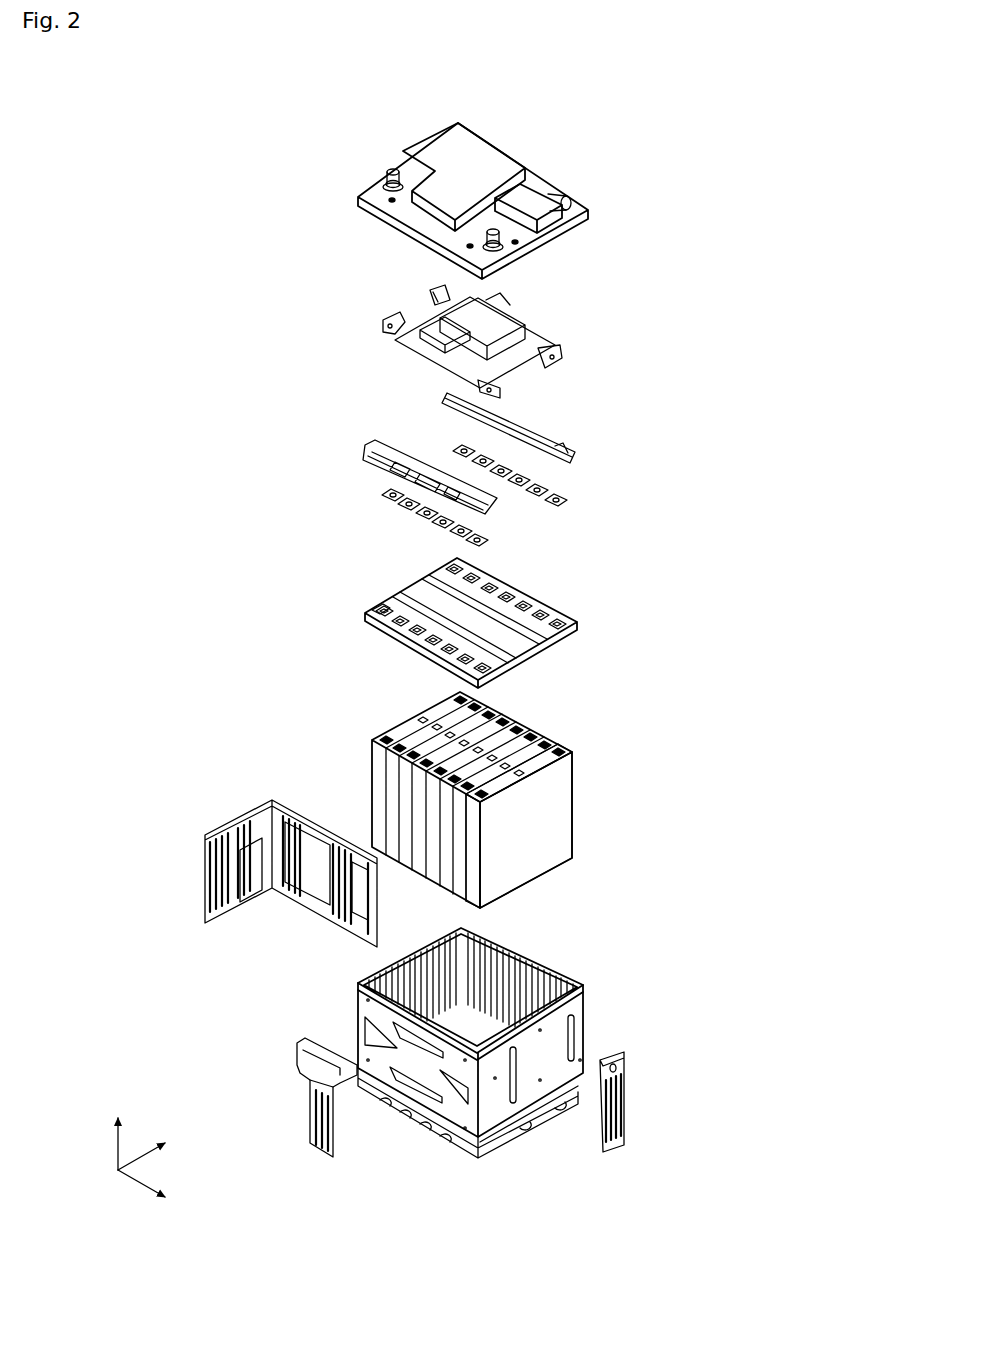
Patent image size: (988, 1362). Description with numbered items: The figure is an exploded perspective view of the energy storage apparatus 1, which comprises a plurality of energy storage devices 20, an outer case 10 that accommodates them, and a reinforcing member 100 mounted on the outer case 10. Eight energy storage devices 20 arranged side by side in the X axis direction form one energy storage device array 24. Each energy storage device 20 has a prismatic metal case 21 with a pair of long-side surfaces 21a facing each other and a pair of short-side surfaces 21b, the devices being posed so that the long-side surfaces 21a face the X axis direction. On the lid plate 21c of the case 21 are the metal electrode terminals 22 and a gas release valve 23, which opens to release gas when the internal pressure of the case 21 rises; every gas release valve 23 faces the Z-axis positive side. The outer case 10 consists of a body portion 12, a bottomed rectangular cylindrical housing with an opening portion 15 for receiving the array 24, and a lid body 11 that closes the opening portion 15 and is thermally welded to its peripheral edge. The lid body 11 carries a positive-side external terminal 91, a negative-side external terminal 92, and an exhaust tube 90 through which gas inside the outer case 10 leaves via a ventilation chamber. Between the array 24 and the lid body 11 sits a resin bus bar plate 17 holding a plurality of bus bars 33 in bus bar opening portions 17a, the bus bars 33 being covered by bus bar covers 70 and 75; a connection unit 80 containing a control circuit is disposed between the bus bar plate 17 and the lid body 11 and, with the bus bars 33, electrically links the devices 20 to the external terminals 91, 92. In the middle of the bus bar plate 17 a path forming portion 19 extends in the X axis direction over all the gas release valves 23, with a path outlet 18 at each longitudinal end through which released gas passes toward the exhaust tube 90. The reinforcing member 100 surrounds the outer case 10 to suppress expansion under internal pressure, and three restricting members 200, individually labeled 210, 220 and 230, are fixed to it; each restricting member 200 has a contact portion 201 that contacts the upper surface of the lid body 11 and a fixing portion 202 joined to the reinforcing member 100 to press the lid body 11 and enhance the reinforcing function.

The energy storage apparatus 1 is at (598, 114).
The outer case 10 is at (744, 439).
The lid body 11 is at (558, 235).
The body portion 12 is at (588, 982).
The opening portion 15 is at (357, 958).
The bus bar plate 17 is at (553, 600).
The bus bar opening portion 17a is at (386, 608).
The path outlet 18 is at (424, 590).
The path forming portion 19 is at (481, 622).
The energy storage device 20 is at (377, 757).
The case 21 is at (571, 828).
The long-side surface 21a is at (533, 853).
The short-side surface 21b is at (470, 880).
The lid plate 21c is at (540, 765).
The electrode terminal 22 is at (560, 749).
The gas release valve 23 is at (421, 722).
The energy storage device array 24 is at (356, 721).
The bus bar 33 is at (538, 508).
The bus bar cover 70 is at (553, 437).
The bus bar cover 75 is at (385, 445).
The connection unit 80 is at (571, 327).
The exhaust tube 90 is at (572, 194).
The external terminal 91 is at (493, 229).
The external terminal 92 is at (392, 171).
The reinforcing member 100 is at (495, 1098).
The restricting member 200 is at (450, 989).
The contact portion 201 is at (310, 1045).
The fixing portion 202 is at (338, 1150).
The restricting member 210 is at (286, 1074).
The restricting member 220 is at (636, 1062).
The restricting member 230 is at (248, 912).